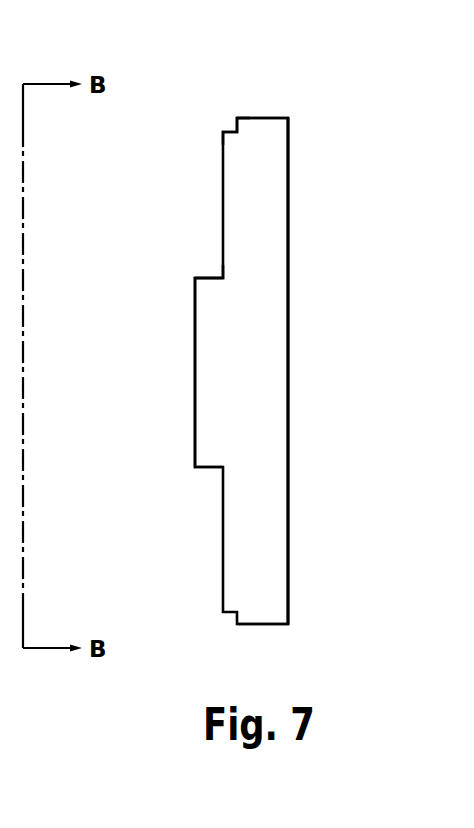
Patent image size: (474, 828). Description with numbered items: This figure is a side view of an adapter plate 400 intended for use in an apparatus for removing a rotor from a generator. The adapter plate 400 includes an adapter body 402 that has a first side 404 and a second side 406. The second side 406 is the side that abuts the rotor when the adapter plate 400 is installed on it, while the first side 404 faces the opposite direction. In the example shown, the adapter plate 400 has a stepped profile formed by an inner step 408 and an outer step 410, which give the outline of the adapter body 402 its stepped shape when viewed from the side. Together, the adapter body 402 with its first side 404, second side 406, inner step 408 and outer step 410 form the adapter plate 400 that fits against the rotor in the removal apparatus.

The adapter plate 400 is at (362, 73).
The adapter body 402 is at (267, 148).
The first side 404 is at (148, 333).
The second side 406 is at (317, 229).
The inner step 408 is at (204, 260).
The outer step 410 is at (224, 117).